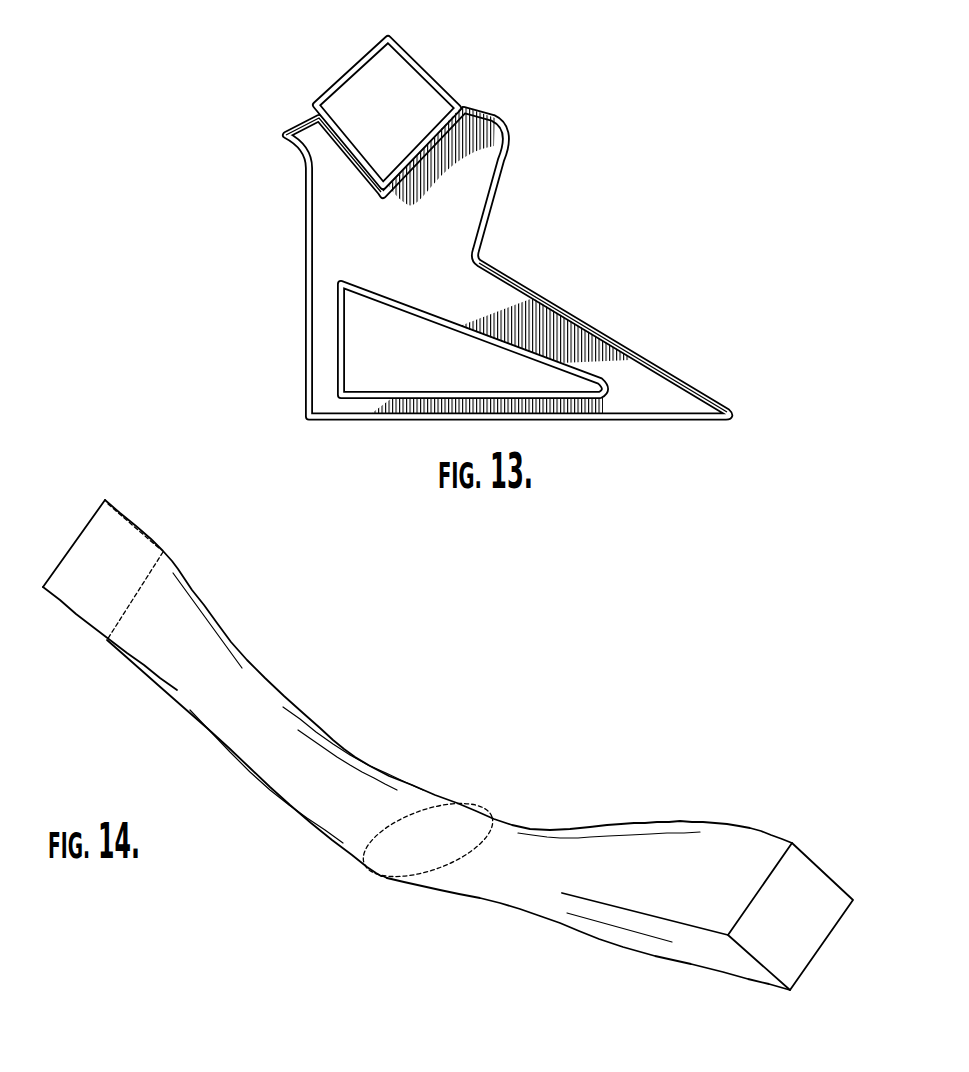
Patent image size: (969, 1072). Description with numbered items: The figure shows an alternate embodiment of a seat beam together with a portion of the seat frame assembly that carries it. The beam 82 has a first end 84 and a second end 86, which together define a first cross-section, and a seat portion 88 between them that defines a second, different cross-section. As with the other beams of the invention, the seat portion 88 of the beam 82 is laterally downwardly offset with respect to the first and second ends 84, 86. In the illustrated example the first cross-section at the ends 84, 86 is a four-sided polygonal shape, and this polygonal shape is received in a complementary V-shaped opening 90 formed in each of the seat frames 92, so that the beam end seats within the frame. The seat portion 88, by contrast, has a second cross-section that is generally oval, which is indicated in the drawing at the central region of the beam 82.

In FIG. 13, the beam 82 is at (453, 71).
In FIG. 14, the beam 82 is at (460, 752).
In FIG. 14, the first end 84 is at (140, 521).
In FIG. 14, the second end 86 is at (792, 843).
In FIG. 14, the seat portion 88 is at (387, 877).
In FIG. 13, the V-shaped opening 90 is at (353, 163).
In FIG. 13, the seat frame 92 is at (549, 297).